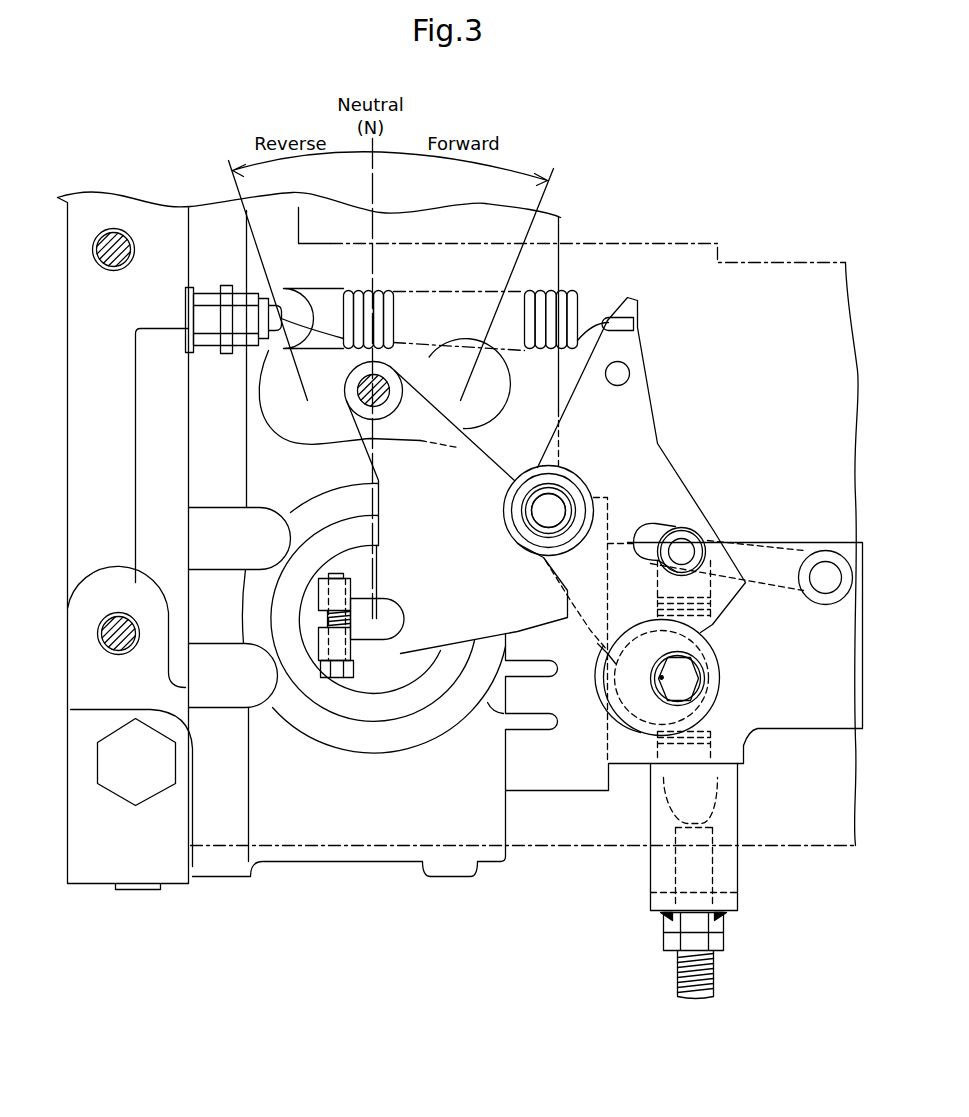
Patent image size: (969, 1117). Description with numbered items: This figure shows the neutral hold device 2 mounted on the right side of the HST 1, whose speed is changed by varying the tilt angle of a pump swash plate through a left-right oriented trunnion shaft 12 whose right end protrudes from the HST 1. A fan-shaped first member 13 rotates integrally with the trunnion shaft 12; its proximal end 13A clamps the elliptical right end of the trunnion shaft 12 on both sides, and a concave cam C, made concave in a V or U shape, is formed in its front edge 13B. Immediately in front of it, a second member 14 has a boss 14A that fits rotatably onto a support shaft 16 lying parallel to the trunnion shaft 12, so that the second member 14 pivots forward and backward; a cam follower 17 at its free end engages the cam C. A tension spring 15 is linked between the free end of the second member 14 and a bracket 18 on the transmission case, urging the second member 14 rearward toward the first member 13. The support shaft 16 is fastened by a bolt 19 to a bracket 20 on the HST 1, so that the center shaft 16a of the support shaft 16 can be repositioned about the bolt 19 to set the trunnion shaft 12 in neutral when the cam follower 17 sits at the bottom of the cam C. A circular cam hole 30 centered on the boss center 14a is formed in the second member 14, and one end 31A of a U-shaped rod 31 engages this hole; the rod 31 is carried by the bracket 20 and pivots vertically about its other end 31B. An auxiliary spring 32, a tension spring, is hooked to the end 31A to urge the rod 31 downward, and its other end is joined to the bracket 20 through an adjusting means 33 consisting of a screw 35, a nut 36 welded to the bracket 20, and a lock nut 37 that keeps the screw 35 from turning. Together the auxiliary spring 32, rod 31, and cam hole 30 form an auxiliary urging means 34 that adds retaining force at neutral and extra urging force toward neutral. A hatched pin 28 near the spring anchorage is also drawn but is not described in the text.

The HST 1 is at (322, 863).
The neutral hold device 2 is at (664, 324).
The trunnion shaft 12 is at (395, 610).
The first member 13 is at (358, 462).
The proximal end 13A is at (370, 653).
The front edge 13B is at (466, 424).
The second member 14 is at (650, 410).
The boss 14A is at (640, 682).
The center of the boss 14a is at (591, 729).
The spring 15 is at (547, 291).
The support shaft 16 is at (623, 657).
The center shaft 16a is at (660, 678).
The cam follower 17 is at (573, 473).
The bracket 18 is at (263, 348).
The bolt 19 is at (685, 677).
The bracket 20 is at (808, 723).
The spring pin 28 is at (353, 392).
The cam hole 30 is at (658, 525).
The rod 31 is at (758, 585).
The one end of the rod 31A is at (678, 524).
The other end of the rod 31B is at (823, 592).
The auxiliary spring 32 is at (725, 738).
The adjusting means 33 is at (748, 962).
The auxiliary urging means 34 is at (775, 522).
The screw 35 is at (713, 977).
The nut 36 is at (720, 925).
The lock nut 37 is at (668, 940).
The cam C is at (515, 520).